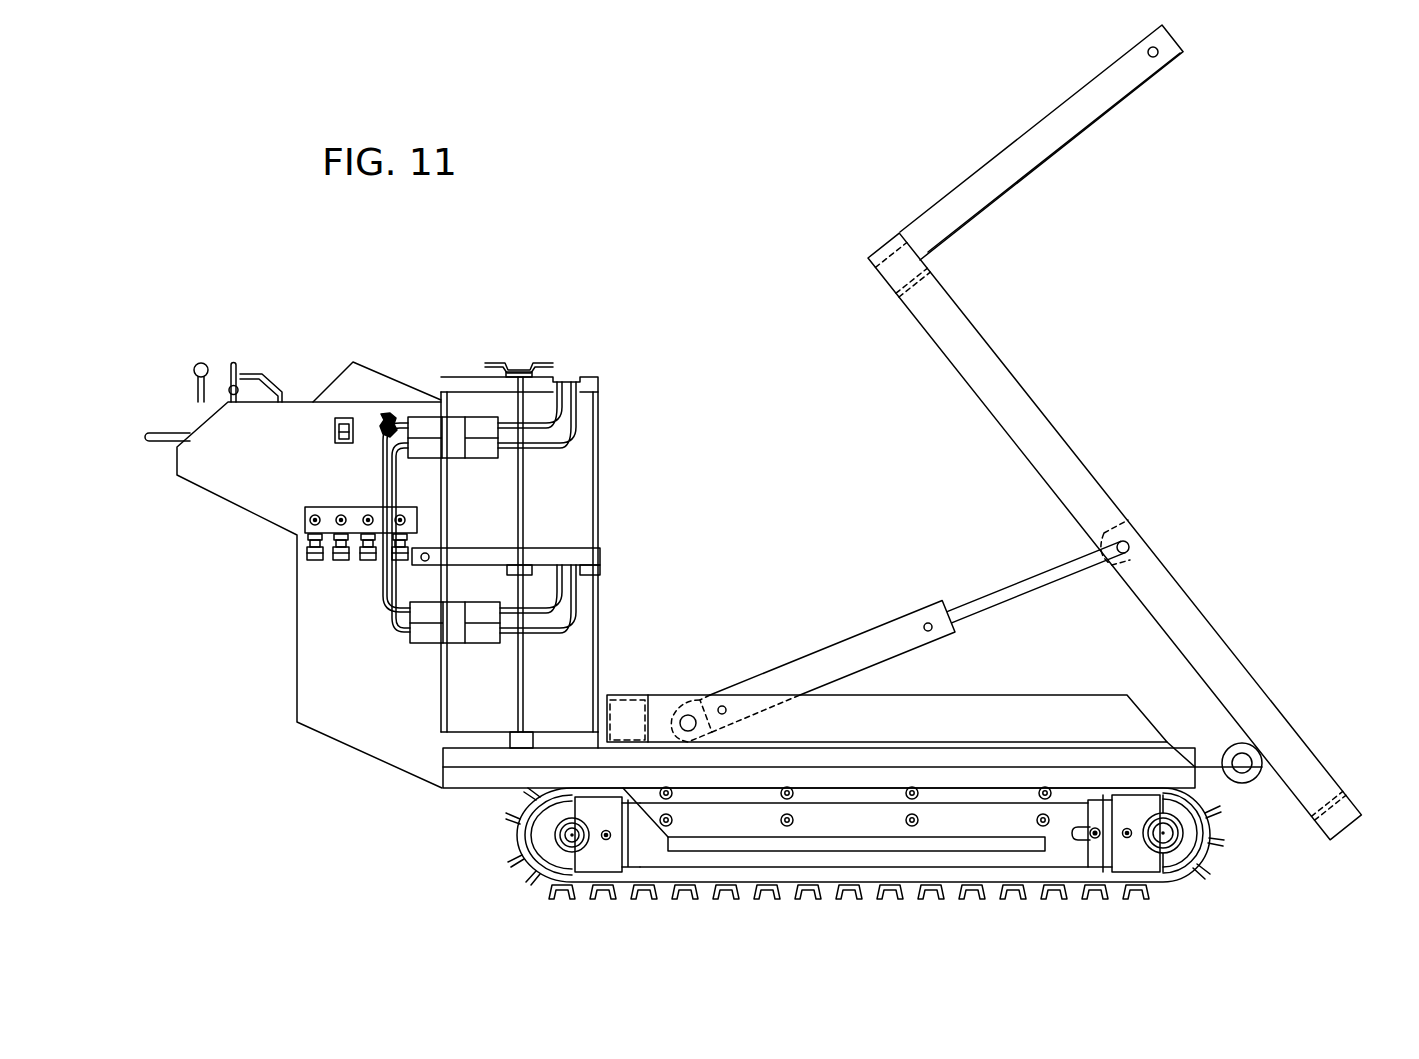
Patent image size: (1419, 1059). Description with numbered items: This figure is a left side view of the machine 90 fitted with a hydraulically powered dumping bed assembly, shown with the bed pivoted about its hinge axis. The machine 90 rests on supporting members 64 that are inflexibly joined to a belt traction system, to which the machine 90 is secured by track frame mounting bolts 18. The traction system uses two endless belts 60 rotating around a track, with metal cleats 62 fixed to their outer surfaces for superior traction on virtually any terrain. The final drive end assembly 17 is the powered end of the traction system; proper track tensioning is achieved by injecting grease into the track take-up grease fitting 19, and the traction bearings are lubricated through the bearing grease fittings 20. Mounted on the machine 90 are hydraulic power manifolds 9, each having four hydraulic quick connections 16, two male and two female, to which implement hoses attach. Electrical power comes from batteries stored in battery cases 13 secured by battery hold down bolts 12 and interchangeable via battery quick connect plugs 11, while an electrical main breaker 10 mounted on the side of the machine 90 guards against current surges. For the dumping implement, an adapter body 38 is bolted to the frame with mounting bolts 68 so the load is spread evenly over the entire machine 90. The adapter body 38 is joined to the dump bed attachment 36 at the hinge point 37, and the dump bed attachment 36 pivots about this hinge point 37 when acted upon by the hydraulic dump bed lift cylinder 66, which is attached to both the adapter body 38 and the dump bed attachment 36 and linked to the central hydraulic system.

The hydraulic power manifold 9 is at (329, 514).
The electrical main breaker 10 is at (341, 421).
The battery quick connect plug 11 is at (426, 637).
The battery hold down bolt 12 is at (521, 369).
The battery case 13 is at (586, 401).
The hydraulic quick connection 16 is at (307, 545).
The final drive end assembly 17 is at (595, 858).
The track frame mounting bolt 18 is at (1040, 814).
The track take-up grease fitting 19 is at (1092, 829).
The bearing grease fitting 20 is at (608, 829).
The dump bed attachment 36 is at (1268, 706).
The hinge point 37 is at (1245, 774).
The adapter body 38 is at (482, 780).
The endless belt 60 is at (1210, 863).
The metal cleat 62 is at (1172, 891).
The supporting member 64 is at (857, 845).
The hydraulic dump bed lift cylinder 66 is at (882, 641).
The mounting bolt 68 is at (787, 792).
The machine 90 is at (279, 651).